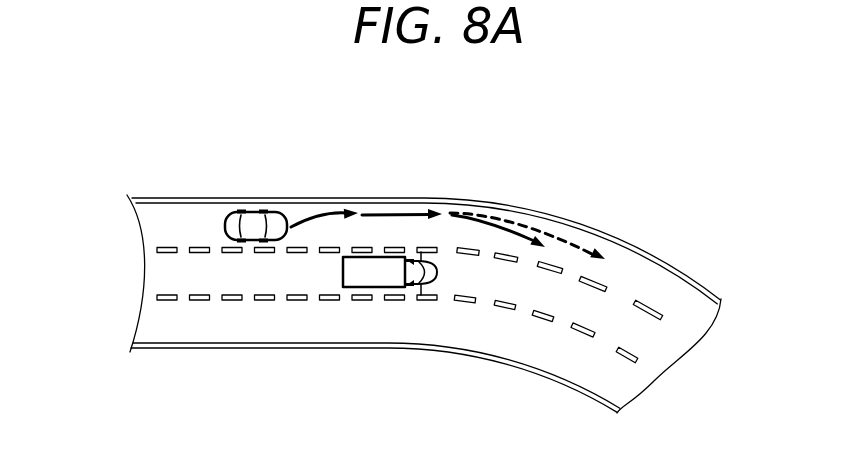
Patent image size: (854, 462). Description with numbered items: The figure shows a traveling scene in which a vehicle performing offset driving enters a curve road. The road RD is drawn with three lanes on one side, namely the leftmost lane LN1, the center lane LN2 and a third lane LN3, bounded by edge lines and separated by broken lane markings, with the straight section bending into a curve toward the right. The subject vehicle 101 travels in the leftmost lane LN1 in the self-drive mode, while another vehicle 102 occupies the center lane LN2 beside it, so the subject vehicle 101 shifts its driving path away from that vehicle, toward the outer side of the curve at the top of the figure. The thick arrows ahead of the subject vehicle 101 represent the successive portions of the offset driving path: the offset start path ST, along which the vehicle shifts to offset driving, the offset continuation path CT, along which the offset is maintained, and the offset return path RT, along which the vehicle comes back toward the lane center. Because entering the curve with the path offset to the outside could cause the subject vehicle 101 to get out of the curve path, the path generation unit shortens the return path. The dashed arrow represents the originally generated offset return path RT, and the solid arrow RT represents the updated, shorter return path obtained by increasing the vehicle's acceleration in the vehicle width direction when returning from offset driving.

The road RD is at (162, 198).
The leftmost lane LN1 is at (157, 230).
The center lane LN2 is at (157, 283).
The third lane LN3 is at (157, 332).
The subject vehicle 101 is at (260, 211).
The other vehicle (truck) 102 is at (378, 288).
The straight travel trajectory ST is at (317, 209).
The candidate trajectory CT is at (389, 214).
The offset return path RT is at (505, 225).